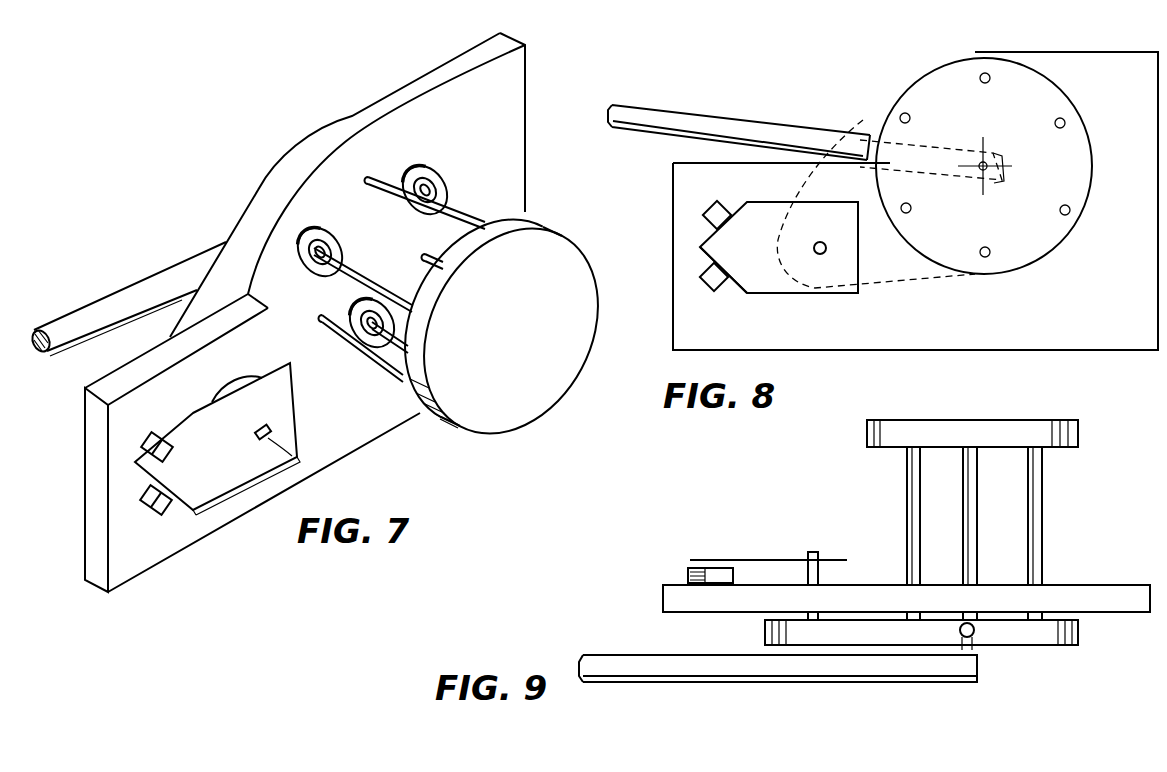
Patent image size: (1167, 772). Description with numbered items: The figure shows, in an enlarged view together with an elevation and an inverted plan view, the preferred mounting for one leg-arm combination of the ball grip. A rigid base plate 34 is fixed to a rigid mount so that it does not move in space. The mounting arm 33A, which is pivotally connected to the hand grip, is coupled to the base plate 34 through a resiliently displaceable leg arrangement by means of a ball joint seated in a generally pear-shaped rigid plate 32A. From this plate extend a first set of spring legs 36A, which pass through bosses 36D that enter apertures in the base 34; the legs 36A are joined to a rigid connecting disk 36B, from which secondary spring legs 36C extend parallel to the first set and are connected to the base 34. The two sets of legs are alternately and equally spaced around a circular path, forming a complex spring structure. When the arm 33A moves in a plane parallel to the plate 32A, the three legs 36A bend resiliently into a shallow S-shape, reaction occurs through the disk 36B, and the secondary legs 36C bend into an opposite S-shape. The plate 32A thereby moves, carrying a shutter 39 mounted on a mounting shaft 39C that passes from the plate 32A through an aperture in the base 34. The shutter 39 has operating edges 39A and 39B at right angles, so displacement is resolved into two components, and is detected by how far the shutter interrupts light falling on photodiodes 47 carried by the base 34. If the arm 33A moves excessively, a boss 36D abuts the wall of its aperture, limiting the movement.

In FIG. 7, the pear-shaped rigid plate 32A is at (273, 190).
In FIG. 8, the pear-shaped rigid plate 32A is at (860, 150).
In FIG. 9, the pear-shaped rigid plate 32A is at (1077, 635).
In FIG. 7, the mounting arm 33A is at (150, 288).
In FIG. 8, the mounting arm 33A is at (713, 127).
In FIG. 9, the mounting arm 33A is at (858, 667).
In FIG. 7, the rigid base plate 34 is at (345, 438).
In FIG. 8, the rigid base plate 34 is at (1078, 334).
In FIG. 9, the rigid base plate 34 is at (1073, 595).
In FIG. 7, the first set of spring legs 36A is at (460, 200).
In FIG. 8, the first set of spring legs 36A is at (912, 115).
In FIG. 7, the rigid connecting disk 36B is at (543, 310).
In FIG. 8, the rigid connecting disk 36B is at (1083, 171).
In FIG. 9, the rigid connecting disk 36B is at (1003, 430).
In FIG. 7, the secondary spring legs 36C is at (377, 181).
In FIG. 8, the secondary spring legs 36C is at (990, 74).
In FIG. 7, the bosses 36D is at (438, 178).
In FIG. 7, the shutter 39 is at (242, 458).
In FIG. 9, the shutter 39 is at (752, 558).
In FIG. 8, the operating edge 39A is at (738, 207).
In FIG. 8, the operating edge 39B is at (738, 290).
In FIG. 7, the mounting shaft 39C is at (292, 456).
In FIG. 8, the mounting shaft 39C is at (820, 255).
In FIG. 9, the mounting shaft 39C is at (815, 550).
In FIG. 7, the photodiodes 47 is at (148, 503).
In FIG. 8, the photodiodes 47 is at (707, 215).
In FIG. 9, the photodiodes 47 is at (713, 575).